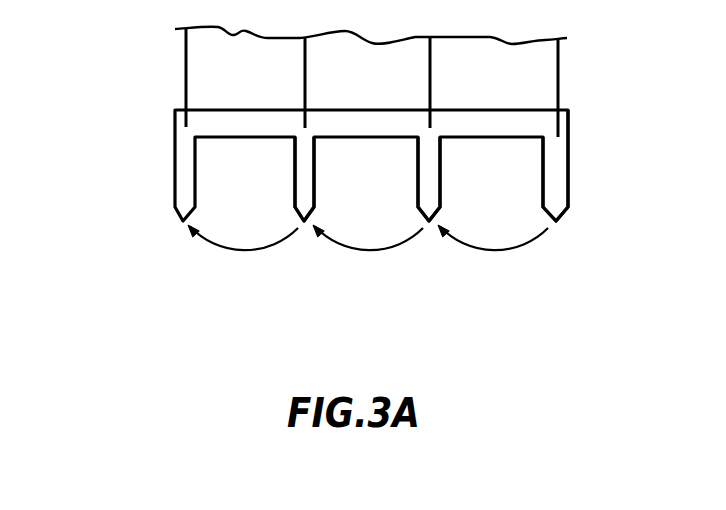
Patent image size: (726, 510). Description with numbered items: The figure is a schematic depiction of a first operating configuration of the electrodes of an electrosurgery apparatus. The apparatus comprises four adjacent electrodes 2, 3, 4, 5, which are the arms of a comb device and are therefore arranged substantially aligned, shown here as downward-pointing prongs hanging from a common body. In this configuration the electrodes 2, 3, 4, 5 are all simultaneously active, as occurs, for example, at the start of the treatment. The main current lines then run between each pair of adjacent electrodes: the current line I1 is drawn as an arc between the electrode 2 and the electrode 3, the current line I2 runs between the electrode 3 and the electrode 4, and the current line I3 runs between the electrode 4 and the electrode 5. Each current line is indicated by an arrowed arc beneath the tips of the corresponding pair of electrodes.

The electrode 2 is at (173, 161).
The electrode 3 is at (303, 172).
The electrode 4 is at (433, 178).
The electrode 5 is at (557, 175).
The main current line I1 is at (238, 252).
The main current line I2 is at (350, 251).
The main current line I3 is at (495, 251).